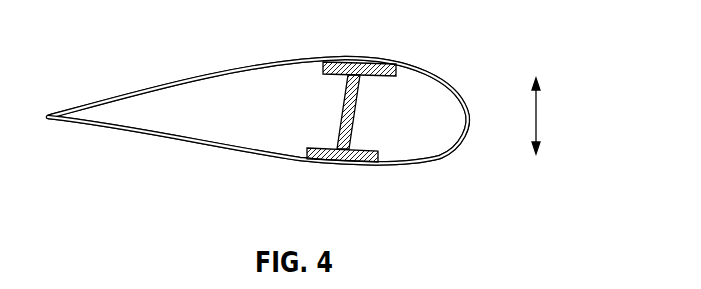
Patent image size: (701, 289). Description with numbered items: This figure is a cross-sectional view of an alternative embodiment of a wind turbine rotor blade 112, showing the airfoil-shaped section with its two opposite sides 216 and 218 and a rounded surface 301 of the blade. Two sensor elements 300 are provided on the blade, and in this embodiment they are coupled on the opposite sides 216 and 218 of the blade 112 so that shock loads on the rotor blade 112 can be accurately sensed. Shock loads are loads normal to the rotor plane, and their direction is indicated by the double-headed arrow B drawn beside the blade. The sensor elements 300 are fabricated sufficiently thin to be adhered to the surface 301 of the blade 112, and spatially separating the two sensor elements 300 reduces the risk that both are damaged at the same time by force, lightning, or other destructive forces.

The rotor blade 112 is at (291, 107).
The side of blade 218 is at (245, 67).
The side of blade 216 is at (218, 148).
The sensor element 300 is at (366, 54).
The surface 301 is at (453, 148).
The arrow B is at (537, 117).